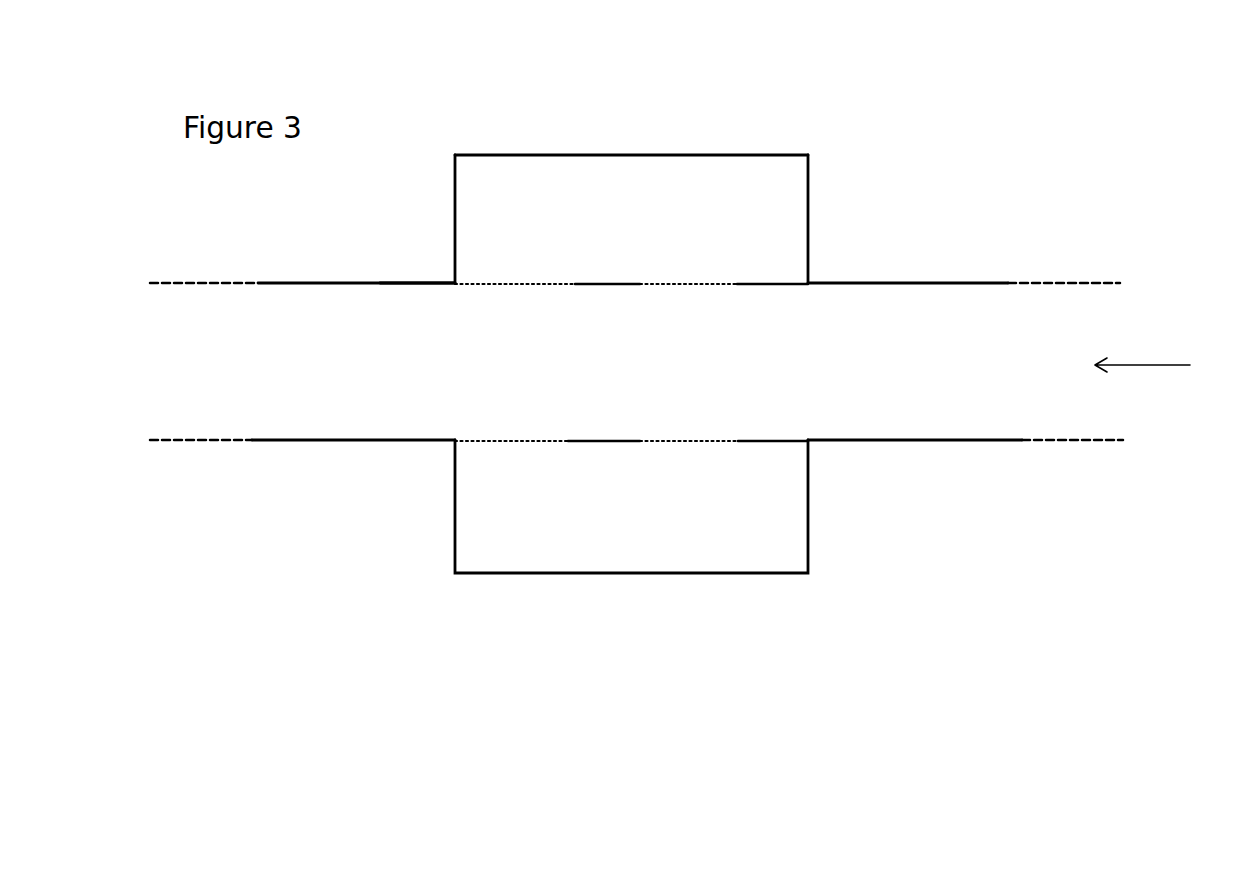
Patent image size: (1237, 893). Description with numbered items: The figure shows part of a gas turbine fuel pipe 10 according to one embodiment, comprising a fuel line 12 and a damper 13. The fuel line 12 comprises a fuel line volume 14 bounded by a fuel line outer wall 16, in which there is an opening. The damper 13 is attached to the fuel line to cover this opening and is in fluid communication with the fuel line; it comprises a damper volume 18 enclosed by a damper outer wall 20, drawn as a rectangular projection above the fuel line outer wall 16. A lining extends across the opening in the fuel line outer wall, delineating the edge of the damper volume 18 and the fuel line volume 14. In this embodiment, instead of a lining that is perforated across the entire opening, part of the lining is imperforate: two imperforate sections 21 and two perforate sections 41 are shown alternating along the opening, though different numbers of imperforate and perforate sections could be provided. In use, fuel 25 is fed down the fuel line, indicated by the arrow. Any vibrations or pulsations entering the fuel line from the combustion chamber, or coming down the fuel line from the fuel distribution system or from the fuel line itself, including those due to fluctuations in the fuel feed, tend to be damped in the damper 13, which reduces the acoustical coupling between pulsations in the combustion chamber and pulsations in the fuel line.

The gas turbine fuel pipe 10 is at (1025, 140).
The fuel line 12 is at (313, 494).
The damper 13 is at (806, 82).
The fuel line volume 14 is at (368, 312).
The fuel line outer wall 16 is at (395, 283).
The damper volume 18 is at (636, 225).
The damper outer wall 20 is at (488, 155).
The imperforate section 21 is at (473, 283).
The fuel 25 is at (1157, 365).
The perforate section 41 is at (576, 283).